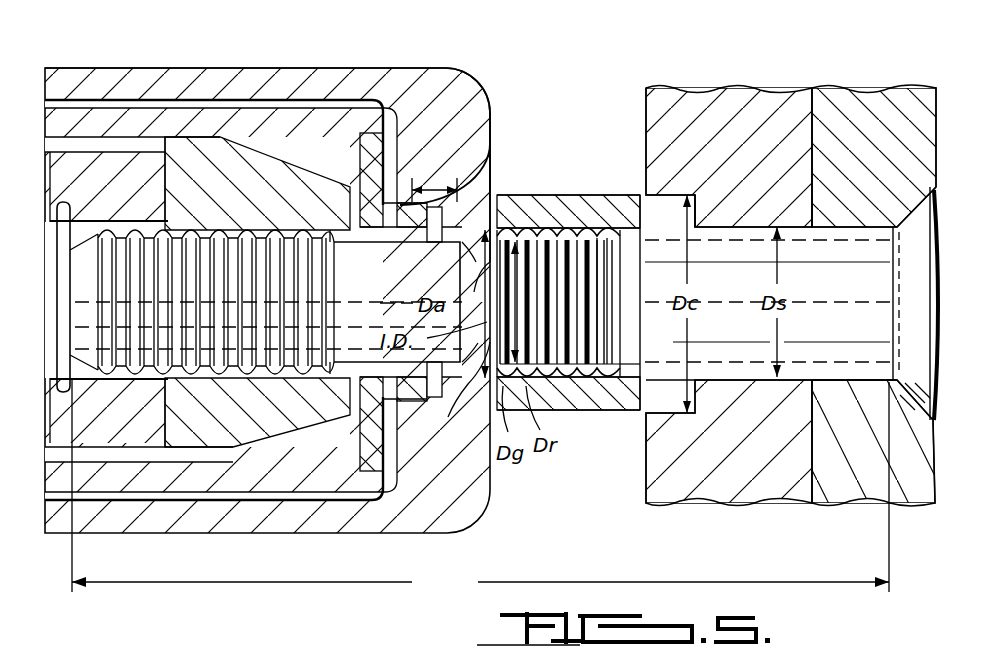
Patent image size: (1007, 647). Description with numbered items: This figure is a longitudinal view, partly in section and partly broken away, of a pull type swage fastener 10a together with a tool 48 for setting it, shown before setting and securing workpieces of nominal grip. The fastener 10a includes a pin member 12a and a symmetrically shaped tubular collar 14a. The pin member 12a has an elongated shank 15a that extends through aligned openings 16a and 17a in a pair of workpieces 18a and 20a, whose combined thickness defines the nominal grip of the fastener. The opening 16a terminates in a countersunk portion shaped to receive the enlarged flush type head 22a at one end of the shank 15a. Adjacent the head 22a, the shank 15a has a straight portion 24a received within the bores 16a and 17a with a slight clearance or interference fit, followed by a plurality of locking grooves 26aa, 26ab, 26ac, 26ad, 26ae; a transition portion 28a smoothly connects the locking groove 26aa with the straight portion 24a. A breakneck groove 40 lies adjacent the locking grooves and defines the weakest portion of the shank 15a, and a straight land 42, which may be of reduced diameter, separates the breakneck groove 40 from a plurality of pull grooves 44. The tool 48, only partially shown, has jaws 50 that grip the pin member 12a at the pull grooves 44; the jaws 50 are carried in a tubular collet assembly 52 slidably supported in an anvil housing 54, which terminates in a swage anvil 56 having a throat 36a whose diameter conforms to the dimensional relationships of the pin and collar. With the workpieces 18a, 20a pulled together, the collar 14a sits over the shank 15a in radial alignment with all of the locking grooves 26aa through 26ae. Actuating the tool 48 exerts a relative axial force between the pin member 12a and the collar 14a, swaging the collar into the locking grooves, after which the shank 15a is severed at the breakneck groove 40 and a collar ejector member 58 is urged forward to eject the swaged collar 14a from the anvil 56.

The fastener 10a is at (515, 478).
The pin member 12a is at (726, 383).
The tubular collar 14a is at (627, 418).
The elongated shank 15a is at (480, 488).
The opening 16a is at (840, 226).
The opening 17a is at (730, 226).
The workpiece 18a is at (895, 121).
The workpiece 20a is at (758, 121).
The enlarged flush type head 22a is at (897, 325).
The straight portion 24a is at (742, 383).
The locking groove 26aa is at (622, 240).
The locking groove 26ab is at (578, 392).
The locking groove 26ac is at (584, 232).
The locking groove 26ad is at (547, 222).
The locking groove 26ae is at (520, 207).
The transition portion 28a is at (622, 366).
The throat 36a is at (492, 136).
The breakneck groove 40 is at (478, 383).
The straight land 42 is at (345, 230).
The pull grooves 44 is at (238, 372).
The tool 48 is at (278, 521).
The jaws 50 is at (220, 170).
The tubular collet assembly 52 is at (136, 116).
The anvil housing 54 is at (325, 82).
The swage anvil 56 is at (420, 232).
The collar ejector member 58 is at (408, 186).